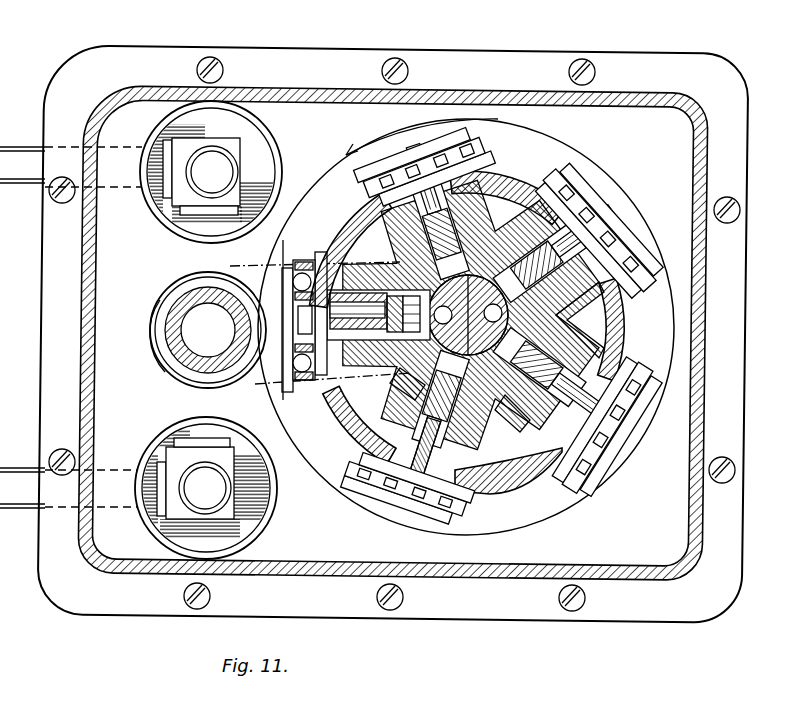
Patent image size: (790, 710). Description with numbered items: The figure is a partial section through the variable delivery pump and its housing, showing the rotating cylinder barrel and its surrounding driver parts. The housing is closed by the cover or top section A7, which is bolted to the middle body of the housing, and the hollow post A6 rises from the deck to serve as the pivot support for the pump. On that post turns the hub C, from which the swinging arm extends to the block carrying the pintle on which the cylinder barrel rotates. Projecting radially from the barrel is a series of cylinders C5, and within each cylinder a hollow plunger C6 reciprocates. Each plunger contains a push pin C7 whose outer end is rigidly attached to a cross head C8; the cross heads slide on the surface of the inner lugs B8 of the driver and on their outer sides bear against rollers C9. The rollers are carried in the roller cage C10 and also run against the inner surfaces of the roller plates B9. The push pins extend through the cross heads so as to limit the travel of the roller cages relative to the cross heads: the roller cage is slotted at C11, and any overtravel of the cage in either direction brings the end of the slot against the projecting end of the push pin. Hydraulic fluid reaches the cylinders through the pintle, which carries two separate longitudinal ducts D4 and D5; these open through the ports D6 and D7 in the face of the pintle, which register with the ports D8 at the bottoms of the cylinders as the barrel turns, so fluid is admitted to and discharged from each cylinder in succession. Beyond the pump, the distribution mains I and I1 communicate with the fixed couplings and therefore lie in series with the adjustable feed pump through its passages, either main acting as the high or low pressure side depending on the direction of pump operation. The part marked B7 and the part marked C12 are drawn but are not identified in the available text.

The distribution main I is at (198, 497).
The distribution main I1 is at (213, 168).
The hollow post A6 is at (190, 294).
The cover or top section A7 is at (352, 94).
The slide block outer bar B7 is at (460, 134).
The inner lug B8 is at (535, 492).
The roller plate B9 is at (603, 201).
The hub C is at (170, 368).
The cylinder C5 is at (457, 437).
The hollow plunger C6 is at (540, 310).
The push pin C7 is at (452, 199).
The cross head C8 is at (493, 170).
The roller C9 is at (301, 278).
The roller cage C10 is at (706, 347).
The slot C11 is at (297, 310).
The bearing plate C12 is at (286, 372).
The duct D4 is at (402, 265).
The duct D5 is at (462, 427).
The port D6 is at (403, 371).
The port D7 is at (557, 328).
The port D8 is at (390, 255).